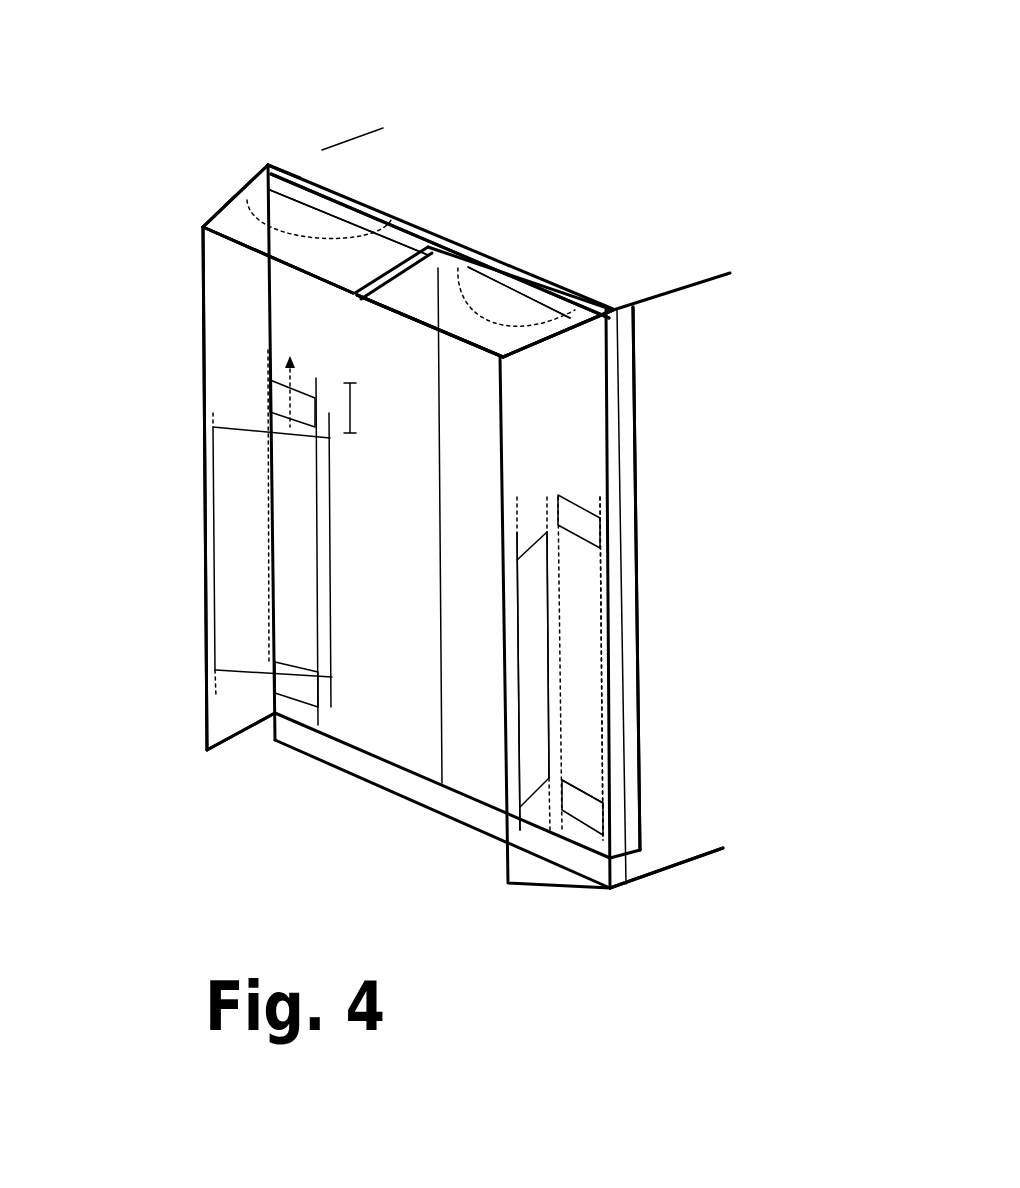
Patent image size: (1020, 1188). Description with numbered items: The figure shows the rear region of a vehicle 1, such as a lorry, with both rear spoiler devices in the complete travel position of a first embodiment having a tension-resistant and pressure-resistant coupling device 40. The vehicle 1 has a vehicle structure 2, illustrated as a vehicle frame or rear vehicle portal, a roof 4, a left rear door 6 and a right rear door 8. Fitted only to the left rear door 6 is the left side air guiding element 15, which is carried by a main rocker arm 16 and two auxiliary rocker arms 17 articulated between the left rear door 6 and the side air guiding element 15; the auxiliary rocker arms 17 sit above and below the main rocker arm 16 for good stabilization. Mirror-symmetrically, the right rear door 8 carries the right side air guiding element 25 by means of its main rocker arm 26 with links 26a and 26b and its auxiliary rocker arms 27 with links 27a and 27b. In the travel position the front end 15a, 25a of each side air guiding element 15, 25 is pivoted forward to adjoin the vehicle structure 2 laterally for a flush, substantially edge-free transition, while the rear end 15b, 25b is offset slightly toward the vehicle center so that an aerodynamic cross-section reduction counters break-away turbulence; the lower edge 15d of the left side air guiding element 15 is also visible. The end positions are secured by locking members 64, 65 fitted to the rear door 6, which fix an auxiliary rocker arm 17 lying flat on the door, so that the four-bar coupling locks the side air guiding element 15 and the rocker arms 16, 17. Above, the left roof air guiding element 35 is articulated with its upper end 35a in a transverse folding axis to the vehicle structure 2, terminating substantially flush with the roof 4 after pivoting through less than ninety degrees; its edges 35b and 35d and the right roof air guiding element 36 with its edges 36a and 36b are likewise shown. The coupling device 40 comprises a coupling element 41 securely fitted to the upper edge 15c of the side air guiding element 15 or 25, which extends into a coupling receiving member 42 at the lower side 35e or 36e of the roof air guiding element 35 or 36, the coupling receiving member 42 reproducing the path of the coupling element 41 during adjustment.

The vehicle 1 is at (722, 268).
The vehicle structure 2 is at (600, 303).
The roof 4 is at (355, 185).
The left rear door 6 is at (358, 718).
The right rear door 8 is at (468, 813).
The left side air guiding element 15 is at (220, 722).
The front end of the left side air guiding element 15a is at (247, 252).
The rear end of the left side air guiding element 15b is at (200, 712).
The upper edge of the left side air guiding element 15c is at (203, 225).
The lower edge of left side wall 15d is at (233, 743).
The main rocker arm 16 is at (242, 580).
The auxiliary rocker arms 17 is at (272, 397).
The right side air guiding element 25 is at (580, 433).
The front end of the right side air guiding element 25a is at (635, 572).
The rear end of the right side air guiding element 25b is at (503, 865).
The main rocker arm 26 is at (533, 677).
The link of the main rocker arm 26a is at (553, 703).
The link of the main rocker arm 26b is at (520, 637).
The auxiliary rocker arms 27 is at (583, 517).
The link of the auxiliary rocker arm 27a is at (603, 817).
The link of the auxiliary rocker arm 27b is at (563, 803).
The roof air guiding element 35 is at (206, 220).
The upper end of the roof air guiding element 35a is at (350, 200).
The fold line of left top flap 35b is at (290, 305).
The corner of left top flap 35d is at (268, 165).
The lower side of the roof air guiding element 35e is at (330, 262).
The roof air guiding element 36 is at (460, 267).
The front edge of right top flap 36a is at (500, 332).
The front edge of right top flap 36b is at (462, 340).
The lower side of the roof air guiding element 36e is at (417, 305).
The coupling device 40 is at (563, 341).
The coupling element 41 is at (580, 332).
The coupling receiving member 42 is at (293, 243).
The locking member 64 is at (355, 440).
The locking member 65 is at (268, 376).